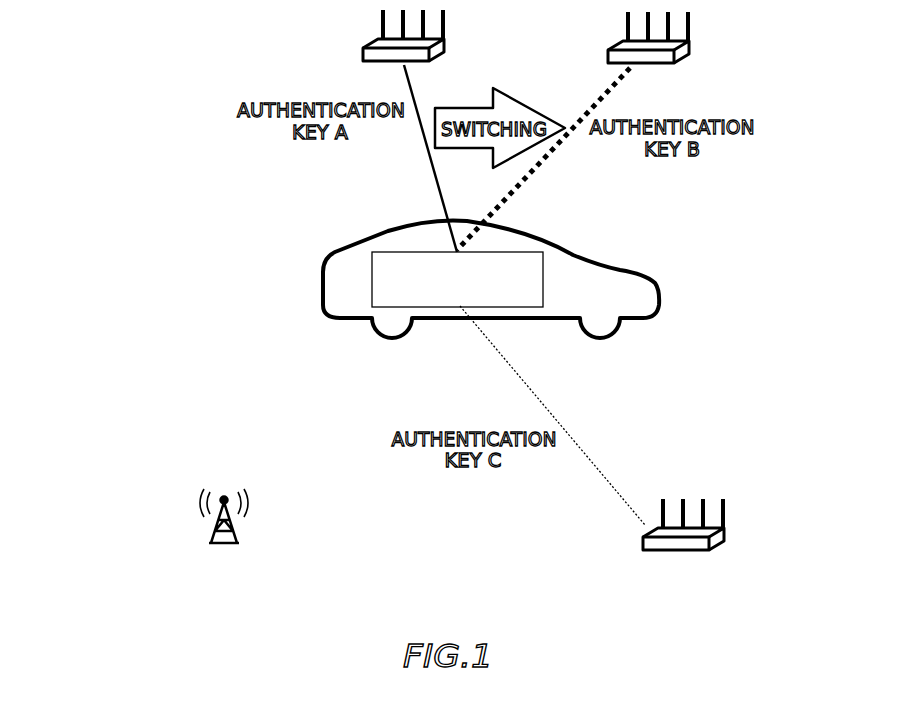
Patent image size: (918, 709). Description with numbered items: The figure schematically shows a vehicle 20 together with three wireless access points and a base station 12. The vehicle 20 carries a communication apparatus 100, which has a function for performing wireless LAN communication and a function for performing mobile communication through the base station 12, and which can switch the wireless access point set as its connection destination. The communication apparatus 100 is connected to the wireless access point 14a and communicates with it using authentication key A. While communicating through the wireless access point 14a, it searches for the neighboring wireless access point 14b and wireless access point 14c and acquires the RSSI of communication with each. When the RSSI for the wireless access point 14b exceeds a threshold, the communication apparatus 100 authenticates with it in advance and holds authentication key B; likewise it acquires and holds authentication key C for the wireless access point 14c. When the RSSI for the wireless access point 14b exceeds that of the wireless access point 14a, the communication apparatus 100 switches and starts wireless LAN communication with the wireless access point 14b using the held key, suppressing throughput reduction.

The base station 12 is at (214, 524).
The wireless access point 14a is at (362, 49).
The wireless access point 14b is at (607, 51).
The wireless access point 14c is at (642, 538).
The vehicle 20 is at (627, 268).
The communication apparatus 100 is at (528, 252).